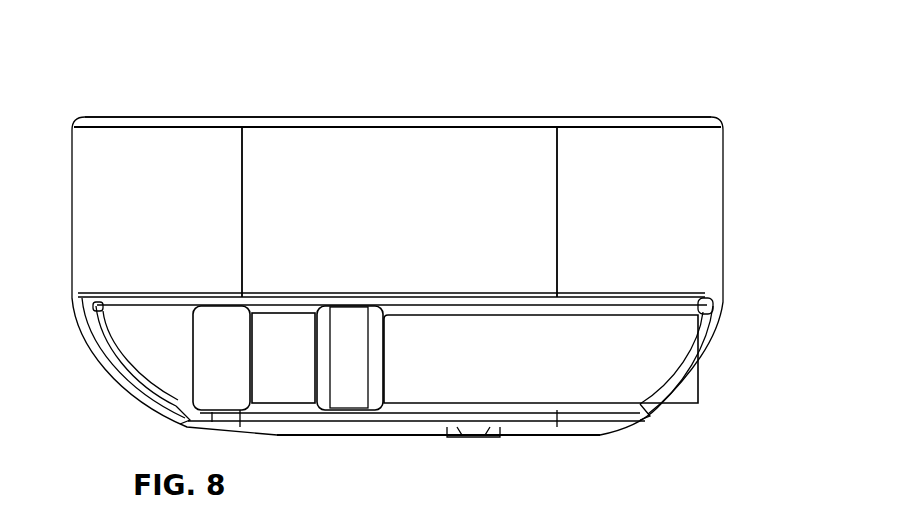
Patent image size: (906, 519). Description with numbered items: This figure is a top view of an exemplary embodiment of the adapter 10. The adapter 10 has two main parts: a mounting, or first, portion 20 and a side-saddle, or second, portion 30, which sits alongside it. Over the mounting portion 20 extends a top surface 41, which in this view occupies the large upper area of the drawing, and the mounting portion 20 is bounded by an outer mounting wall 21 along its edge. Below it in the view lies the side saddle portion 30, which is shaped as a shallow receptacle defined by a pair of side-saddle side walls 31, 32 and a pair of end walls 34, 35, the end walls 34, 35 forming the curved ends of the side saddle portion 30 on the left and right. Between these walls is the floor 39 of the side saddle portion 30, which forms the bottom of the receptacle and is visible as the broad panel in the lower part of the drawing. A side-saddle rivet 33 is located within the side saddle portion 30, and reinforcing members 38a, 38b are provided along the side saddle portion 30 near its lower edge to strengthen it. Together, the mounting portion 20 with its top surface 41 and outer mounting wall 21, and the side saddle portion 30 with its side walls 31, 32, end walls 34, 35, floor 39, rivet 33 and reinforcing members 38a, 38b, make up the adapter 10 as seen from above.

The adapter 10 is at (110, 105).
The mounting portion 20 is at (765, 200).
The outer mounting wall 21 is at (305, 117).
The top surface 41 is at (413, 197).
The side saddle portion 30 is at (735, 352).
The side-saddle side wall 31 is at (398, 415).
The side-saddle side wall 32 is at (170, 302).
The side-saddle rivet 33 is at (352, 362).
The end wall 34 is at (112, 365).
The end wall 35 is at (690, 367).
The reinforcing member 38a is at (472, 436).
The reinforcing member 38b is at (533, 432).
The floor 39 is at (508, 362).